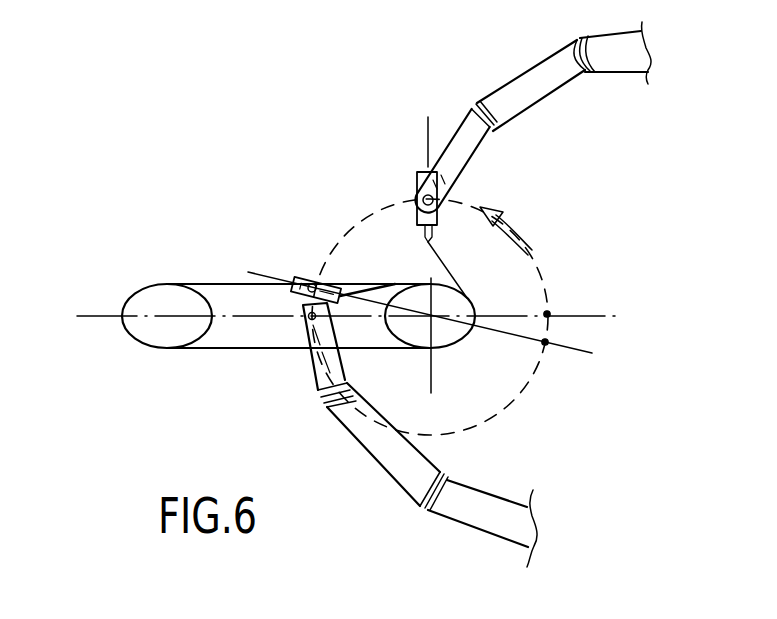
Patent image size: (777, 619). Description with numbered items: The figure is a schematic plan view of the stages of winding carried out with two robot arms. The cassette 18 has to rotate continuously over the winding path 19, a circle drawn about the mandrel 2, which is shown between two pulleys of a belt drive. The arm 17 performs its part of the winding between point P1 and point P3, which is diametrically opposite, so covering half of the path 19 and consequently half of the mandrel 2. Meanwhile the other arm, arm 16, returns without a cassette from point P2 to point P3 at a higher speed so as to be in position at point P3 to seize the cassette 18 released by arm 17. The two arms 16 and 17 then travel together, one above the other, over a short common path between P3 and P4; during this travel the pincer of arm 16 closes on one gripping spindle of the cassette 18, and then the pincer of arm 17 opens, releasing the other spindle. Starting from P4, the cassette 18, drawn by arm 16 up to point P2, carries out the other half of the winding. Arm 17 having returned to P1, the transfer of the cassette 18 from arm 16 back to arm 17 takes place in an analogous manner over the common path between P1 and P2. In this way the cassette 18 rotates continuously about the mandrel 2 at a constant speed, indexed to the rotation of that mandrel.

The mandrel 2 is at (150, 332).
The arm 16 is at (473, 517).
The arm 17 is at (524, 83).
The cassette 18 is at (417, 175).
The winding path 19 is at (503, 410).
The point P1 is at (563, 372).
The point P2 is at (572, 291).
The point P3 is at (322, 276).
The point P4 is at (272, 391).